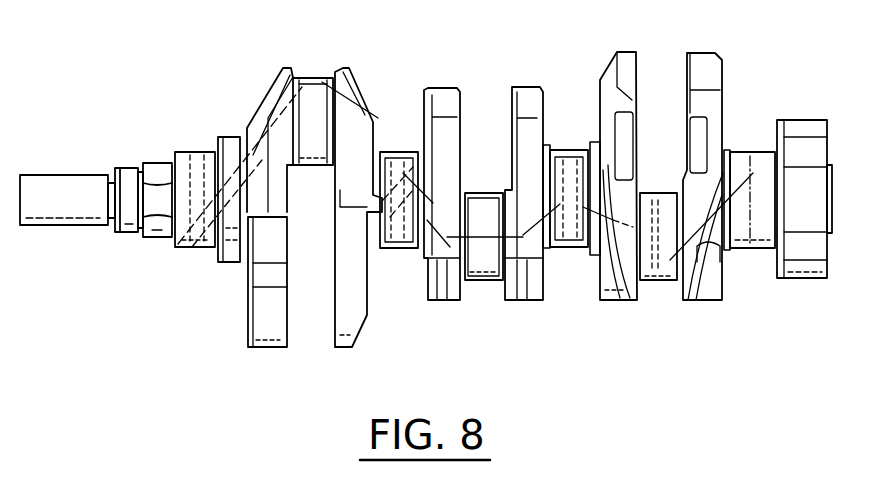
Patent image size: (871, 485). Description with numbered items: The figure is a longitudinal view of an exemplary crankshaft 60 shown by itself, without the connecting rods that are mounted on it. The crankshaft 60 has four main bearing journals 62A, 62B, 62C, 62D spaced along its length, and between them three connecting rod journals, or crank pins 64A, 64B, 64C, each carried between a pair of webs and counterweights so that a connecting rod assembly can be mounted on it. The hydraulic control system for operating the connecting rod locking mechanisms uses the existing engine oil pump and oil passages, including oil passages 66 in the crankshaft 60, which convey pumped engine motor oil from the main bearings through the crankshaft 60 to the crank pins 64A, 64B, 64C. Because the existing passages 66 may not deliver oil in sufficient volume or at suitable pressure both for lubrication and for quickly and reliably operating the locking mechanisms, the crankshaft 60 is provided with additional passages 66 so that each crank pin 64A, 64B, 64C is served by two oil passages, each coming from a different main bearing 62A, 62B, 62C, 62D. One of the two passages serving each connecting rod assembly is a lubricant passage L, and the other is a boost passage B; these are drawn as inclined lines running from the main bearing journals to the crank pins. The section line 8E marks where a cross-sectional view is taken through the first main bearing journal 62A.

The crankshaft 60 is at (70, 58).
The main bearing journal 62A is at (175, 245).
The main bearing journal 62B is at (402, 253).
The main bearing journal 62C is at (572, 253).
The main bearing journal 62D is at (757, 150).
The crank pin 64A is at (308, 170).
The crank pin 64B is at (488, 283).
The crank pin 64C is at (668, 283).
The oil passage 66 is at (193, 178).
The boost passage B is at (248, 128).
The lubricant passage L is at (328, 77).
The section line 8E is at (195, 293).